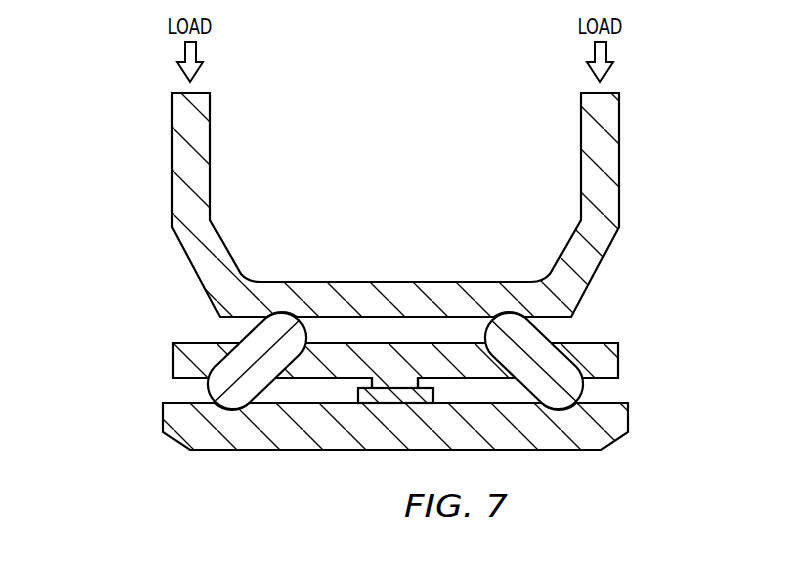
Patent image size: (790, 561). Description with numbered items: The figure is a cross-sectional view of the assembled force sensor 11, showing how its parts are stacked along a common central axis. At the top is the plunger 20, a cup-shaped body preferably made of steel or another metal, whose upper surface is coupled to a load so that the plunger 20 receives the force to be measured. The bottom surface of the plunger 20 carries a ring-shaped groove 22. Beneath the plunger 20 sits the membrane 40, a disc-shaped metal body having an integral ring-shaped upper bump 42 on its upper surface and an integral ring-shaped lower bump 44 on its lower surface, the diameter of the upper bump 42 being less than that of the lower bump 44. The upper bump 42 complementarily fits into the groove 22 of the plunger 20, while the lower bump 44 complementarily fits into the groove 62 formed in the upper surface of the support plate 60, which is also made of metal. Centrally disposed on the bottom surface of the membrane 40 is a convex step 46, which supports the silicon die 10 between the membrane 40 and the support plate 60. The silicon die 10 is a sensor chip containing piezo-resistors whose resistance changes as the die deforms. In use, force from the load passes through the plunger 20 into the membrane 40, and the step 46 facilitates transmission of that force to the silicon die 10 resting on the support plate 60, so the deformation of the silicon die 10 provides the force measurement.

The force sensor 11 is at (106, 183).
The plunger 20 is at (620, 161).
The ring-shaped groove 22 is at (279, 312).
The membrane 40 is at (620, 360).
The upper bump 42 is at (263, 333).
The lower bump 44 is at (212, 386).
The step 46 is at (391, 386).
The silicon die 10 is at (398, 405).
The support plate 60 is at (297, 449).
The groove 62 is at (230, 410).